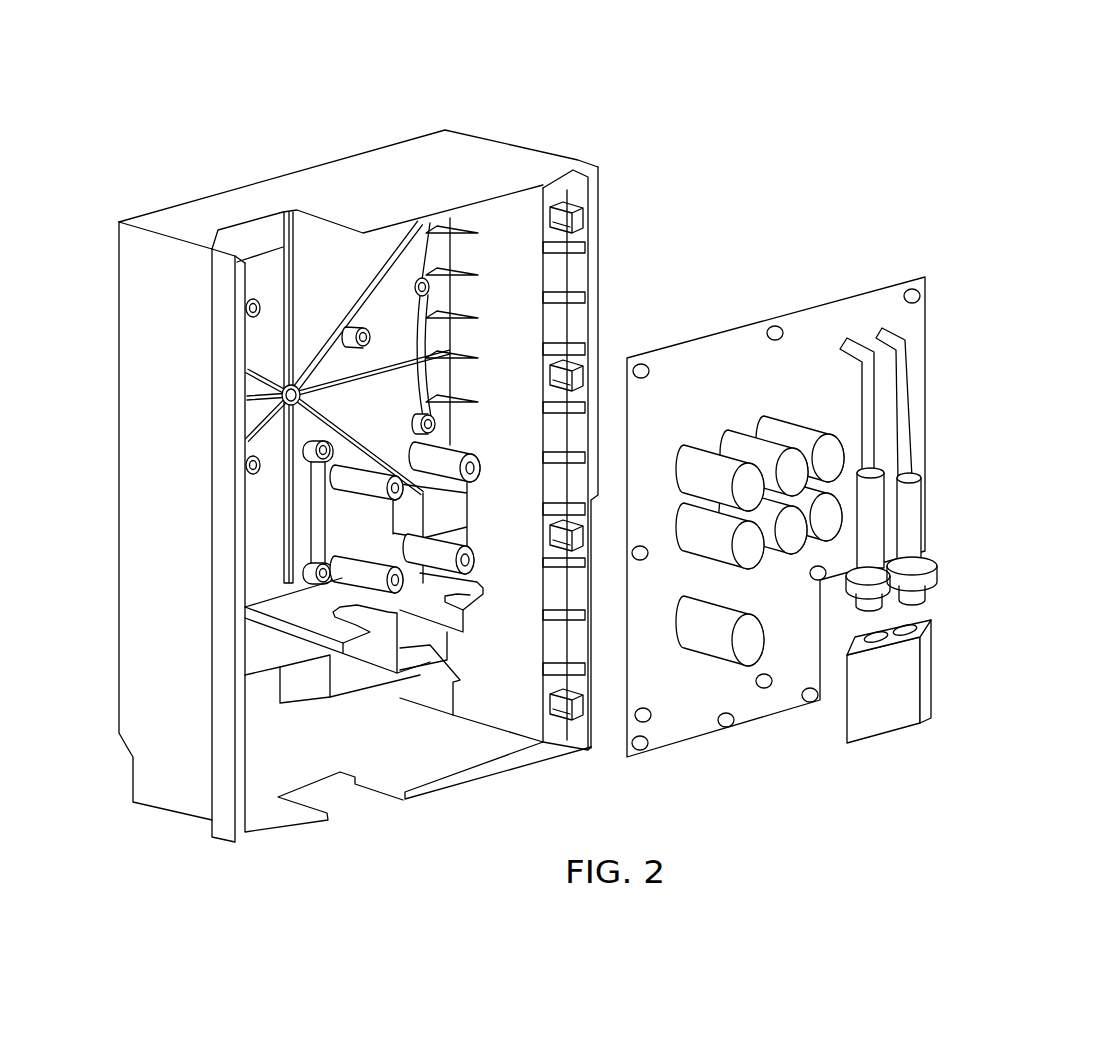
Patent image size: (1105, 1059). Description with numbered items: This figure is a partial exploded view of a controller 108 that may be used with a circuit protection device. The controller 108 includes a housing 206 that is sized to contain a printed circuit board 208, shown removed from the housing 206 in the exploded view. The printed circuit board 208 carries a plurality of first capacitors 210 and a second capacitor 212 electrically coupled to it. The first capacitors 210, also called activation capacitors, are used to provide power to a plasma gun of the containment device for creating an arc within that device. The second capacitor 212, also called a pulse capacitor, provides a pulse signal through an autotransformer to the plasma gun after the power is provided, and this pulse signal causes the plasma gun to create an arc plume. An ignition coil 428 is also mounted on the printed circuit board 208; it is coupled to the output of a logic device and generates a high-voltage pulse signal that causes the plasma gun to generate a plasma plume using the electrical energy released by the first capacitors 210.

The controller 108 is at (838, 72).
The housing 206 is at (492, 147).
The printed circuit board 208 is at (866, 290).
The first capacitors 210 is at (760, 385).
The second capacitor 212 is at (720, 642).
The ignition coil 428 is at (903, 702).